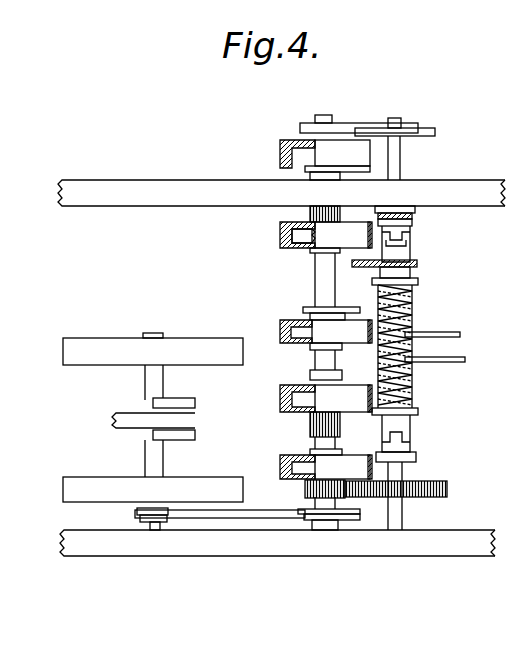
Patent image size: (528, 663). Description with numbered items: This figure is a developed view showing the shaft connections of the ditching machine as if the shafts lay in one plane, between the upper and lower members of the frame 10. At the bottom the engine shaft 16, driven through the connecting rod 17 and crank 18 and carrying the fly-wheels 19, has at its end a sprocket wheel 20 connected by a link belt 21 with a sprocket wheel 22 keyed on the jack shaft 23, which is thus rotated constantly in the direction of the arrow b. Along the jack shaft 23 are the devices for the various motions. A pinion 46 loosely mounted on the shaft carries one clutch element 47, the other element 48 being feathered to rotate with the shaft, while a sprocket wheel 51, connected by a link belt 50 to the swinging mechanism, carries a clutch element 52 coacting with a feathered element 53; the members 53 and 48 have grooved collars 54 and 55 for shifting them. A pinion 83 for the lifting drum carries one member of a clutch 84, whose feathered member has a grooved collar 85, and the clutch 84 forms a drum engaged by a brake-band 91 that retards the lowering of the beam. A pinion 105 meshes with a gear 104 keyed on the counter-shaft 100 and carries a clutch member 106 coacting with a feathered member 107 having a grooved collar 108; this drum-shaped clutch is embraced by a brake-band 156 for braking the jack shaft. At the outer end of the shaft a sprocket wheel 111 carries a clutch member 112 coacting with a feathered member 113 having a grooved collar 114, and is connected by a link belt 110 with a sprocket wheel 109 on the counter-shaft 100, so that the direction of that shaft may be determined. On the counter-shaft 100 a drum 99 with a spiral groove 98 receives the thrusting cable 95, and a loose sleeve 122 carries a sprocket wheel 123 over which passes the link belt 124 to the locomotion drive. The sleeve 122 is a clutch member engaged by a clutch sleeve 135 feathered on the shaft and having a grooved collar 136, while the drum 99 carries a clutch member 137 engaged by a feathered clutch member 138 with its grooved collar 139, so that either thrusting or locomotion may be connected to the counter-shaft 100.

The frame 10 is at (98, 190).
The engine shaft 16 is at (136, 512).
The connecting rod 17 is at (112, 421).
The crank 18 is at (175, 405).
The fly-wheels 19 is at (100, 350).
The sprocket wheel 20 is at (150, 528).
The link belt 21 is at (207, 518).
The sprocket wheel 22 is at (336, 522).
The jack shaft 23 is at (318, 447).
The pinion 46 is at (341, 430).
The clutch element 47 is at (285, 402).
The clutch element 48 is at (290, 385).
The link belt 50 is at (352, 307).
The sprocket wheel 51 is at (300, 310).
The clutch element 52 is at (285, 340).
The clutch element 53 is at (293, 340).
The grooved collar 54 is at (341, 374).
The grooved collar 55 is at (341, 347).
The pinion 83 is at (305, 224).
The clutch 84 is at (300, 238).
The grooved collar 85 is at (300, 250).
The brake-band 91 is at (290, 231).
The thrusting cable 95 is at (435, 358).
The spiral groove 98 is at (414, 388).
The drum 99 is at (414, 308).
The counter-shaft 100 is at (404, 513).
The gear 104 is at (432, 489).
The pinion 105 is at (304, 491).
The clutch member 106 is at (285, 470).
The clutch member 107 is at (290, 458).
The grooved collar 108 is at (342, 452).
The sprocket wheel 109 is at (404, 130).
The link belt 110 is at (350, 123).
The sprocket wheel 111 is at (323, 115).
The clutch member 112 is at (284, 140).
The clutch member 113 is at (290, 165).
The grooved collar 114 is at (305, 180).
The sleeve 122 is at (412, 248).
The sprocket wheel 123 is at (414, 272).
The link belt 124 is at (348, 262).
The clutch sleeve 135 is at (413, 218).
The grooved collar 136 is at (405, 208).
The clutch member 137 is at (413, 436).
The clutch member 138 is at (412, 458).
The grooved collar 139 is at (418, 459).
The brake-band 156 is at (280, 475).
The arrow b is at (328, 282).